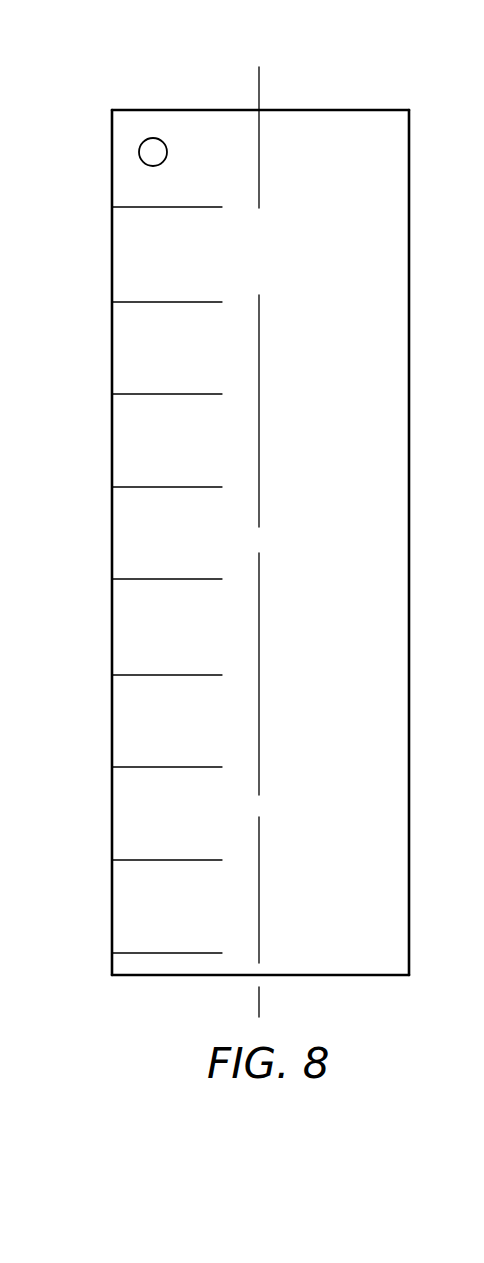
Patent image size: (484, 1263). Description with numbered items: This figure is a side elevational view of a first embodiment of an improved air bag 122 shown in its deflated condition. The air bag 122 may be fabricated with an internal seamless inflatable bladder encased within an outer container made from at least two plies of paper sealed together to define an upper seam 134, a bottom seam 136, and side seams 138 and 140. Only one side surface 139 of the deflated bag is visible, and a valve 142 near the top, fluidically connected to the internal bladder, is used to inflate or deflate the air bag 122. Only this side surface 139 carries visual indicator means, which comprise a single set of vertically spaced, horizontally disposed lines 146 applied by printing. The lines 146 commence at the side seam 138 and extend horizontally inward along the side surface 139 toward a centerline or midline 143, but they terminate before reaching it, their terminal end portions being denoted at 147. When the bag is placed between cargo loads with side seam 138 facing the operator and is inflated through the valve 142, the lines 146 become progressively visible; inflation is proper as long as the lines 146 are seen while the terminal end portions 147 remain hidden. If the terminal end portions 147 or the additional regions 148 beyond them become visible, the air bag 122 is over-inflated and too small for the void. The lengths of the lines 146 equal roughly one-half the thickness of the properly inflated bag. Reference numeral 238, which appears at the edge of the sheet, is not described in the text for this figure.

The air bag 122 is at (383, 78).
The upper seam 134 is at (285, 110).
The bottom seam 136 is at (278, 975).
The side seam 138 is at (112, 434).
The side surface 139 is at (333, 550).
The side seam 140 is at (409, 527).
The valve 142 is at (154, 139).
The centerline or midline 143 is at (262, 721).
The horizontally disposed lines 146 is at (187, 302).
The terminal end portions 147 is at (222, 860).
The additional portions or regions 148 is at (236, 768).
The adjacent tag 238 is at (483, 396).